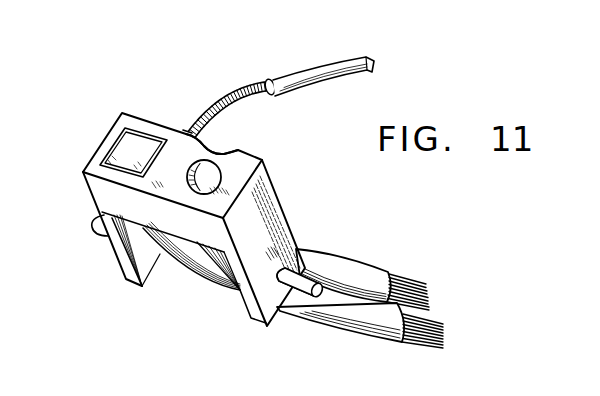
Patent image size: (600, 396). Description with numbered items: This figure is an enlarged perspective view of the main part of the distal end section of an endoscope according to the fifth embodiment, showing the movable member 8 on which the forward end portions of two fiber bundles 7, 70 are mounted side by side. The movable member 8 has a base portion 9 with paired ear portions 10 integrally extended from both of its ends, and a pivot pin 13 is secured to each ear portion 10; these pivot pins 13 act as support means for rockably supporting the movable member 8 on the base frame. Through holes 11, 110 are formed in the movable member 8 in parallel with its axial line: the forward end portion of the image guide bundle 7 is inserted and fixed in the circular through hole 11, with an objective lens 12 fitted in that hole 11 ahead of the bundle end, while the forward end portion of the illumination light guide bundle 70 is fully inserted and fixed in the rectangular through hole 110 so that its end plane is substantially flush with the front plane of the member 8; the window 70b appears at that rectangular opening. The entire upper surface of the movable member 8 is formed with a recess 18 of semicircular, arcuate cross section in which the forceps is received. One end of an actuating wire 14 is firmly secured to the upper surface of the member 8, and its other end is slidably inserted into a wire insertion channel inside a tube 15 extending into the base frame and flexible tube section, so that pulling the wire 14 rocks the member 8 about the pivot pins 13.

The fiber bundle 7 is at (366, 330).
The movable member 8 is at (287, 211).
The base portion 9 is at (128, 214).
The ear portions 10 is at (129, 278).
The through hole 11 is at (200, 161).
The objective lens 12 is at (197, 183).
The pivot pin 13 is at (97, 232).
The actuating wire 14 is at (228, 102).
The tube 15 is at (313, 75).
The recess 18 is at (225, 149).
The fiber bundle 70 is at (357, 276).
The window 70b is at (150, 140).
The through hole 110 is at (103, 153).